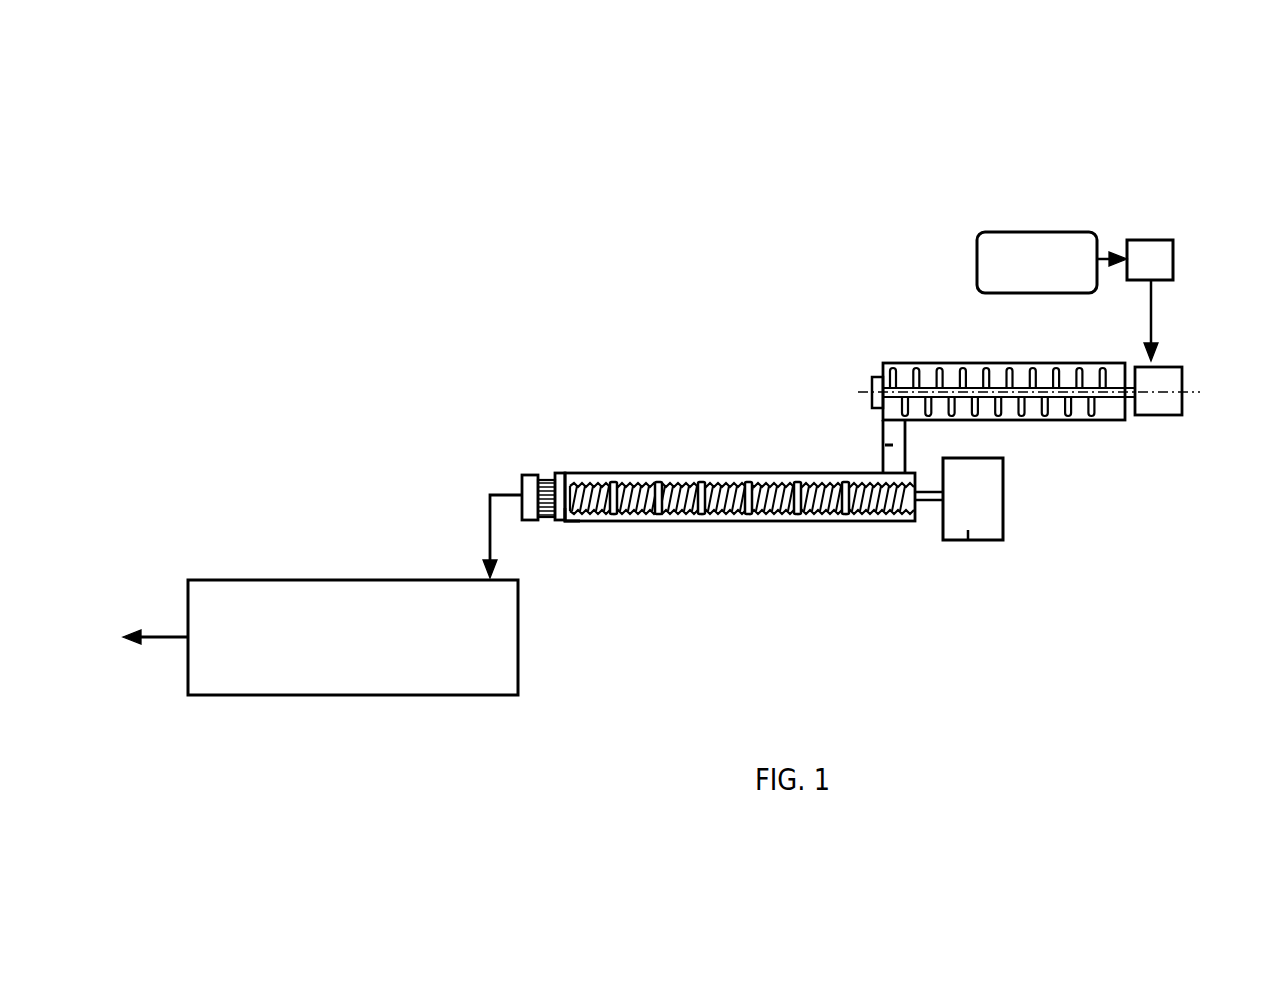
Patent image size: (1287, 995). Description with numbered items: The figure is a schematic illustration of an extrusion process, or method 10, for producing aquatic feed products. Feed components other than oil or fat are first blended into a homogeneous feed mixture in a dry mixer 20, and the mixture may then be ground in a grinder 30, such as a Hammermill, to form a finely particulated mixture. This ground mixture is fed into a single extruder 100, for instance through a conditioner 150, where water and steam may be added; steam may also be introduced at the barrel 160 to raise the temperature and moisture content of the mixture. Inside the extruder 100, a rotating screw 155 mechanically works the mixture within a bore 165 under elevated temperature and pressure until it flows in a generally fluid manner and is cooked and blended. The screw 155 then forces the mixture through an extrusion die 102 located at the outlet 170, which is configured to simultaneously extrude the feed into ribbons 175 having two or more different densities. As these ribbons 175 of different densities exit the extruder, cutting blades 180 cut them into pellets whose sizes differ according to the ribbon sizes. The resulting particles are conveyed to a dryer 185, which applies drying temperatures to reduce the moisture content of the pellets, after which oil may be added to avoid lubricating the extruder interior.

The method 10 is at (1047, 116).
The dry mixer 20 is at (1038, 232).
The grinder 30 is at (1173, 255).
The extruder 100 is at (784, 543).
The extrusion die 102 is at (555, 473).
The conditioner 150 is at (1085, 431).
The rotating screw 155 is at (635, 487).
The barrel 160 is at (782, 523).
The bore 165 is at (712, 482).
The outlet 170 is at (568, 515).
The ribbons 175 is at (538, 455).
The cutting blades 180 is at (528, 475).
The dryer 185 is at (320, 695).